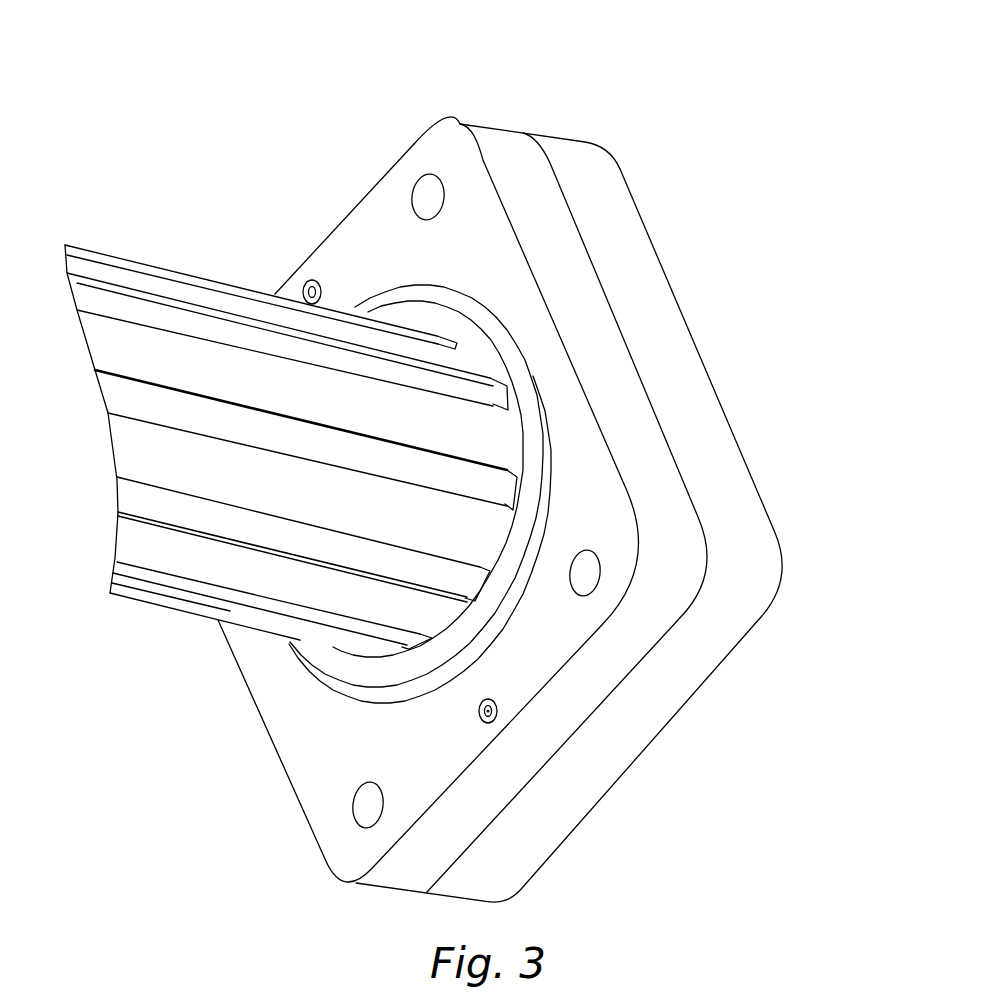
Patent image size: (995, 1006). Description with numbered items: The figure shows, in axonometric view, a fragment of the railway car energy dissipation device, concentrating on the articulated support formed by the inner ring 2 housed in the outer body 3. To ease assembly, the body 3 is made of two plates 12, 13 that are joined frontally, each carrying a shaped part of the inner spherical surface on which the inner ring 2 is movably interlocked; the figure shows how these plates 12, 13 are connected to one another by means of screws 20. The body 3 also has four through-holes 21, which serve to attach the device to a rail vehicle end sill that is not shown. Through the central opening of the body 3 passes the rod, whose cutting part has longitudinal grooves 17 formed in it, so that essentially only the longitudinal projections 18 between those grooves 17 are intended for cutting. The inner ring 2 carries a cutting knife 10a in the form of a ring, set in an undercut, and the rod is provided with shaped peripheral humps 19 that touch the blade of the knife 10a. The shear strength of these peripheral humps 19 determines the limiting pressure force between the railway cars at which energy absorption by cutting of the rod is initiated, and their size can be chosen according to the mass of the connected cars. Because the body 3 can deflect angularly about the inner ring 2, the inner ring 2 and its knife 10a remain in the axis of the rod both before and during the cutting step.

The inner ring 2 is at (382, 703).
The outer body 3 is at (532, 127).
The cutting knife 10a is at (457, 323).
The plate 12 is at (553, 250).
The plate 13 is at (633, 282).
The longitudinal grooves 17 is at (297, 537).
The longitudinal projections 18 is at (420, 520).
The peripheral humps 19 is at (485, 583).
The screws 20 is at (312, 282).
The through-holes 21 is at (586, 582).